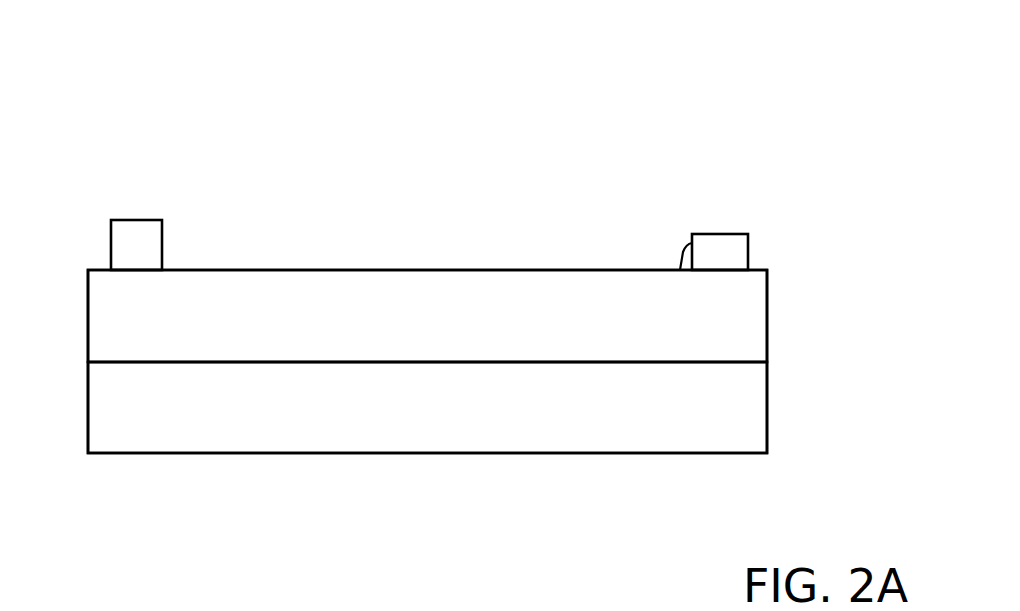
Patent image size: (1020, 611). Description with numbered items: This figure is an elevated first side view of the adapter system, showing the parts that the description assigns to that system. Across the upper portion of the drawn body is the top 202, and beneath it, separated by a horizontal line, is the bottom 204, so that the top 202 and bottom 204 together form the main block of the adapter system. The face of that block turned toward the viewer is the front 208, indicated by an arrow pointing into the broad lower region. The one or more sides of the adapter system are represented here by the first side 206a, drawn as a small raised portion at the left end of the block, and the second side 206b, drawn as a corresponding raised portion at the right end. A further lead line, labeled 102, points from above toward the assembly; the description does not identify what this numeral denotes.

The sensor device 102 is at (683, 158).
The top 202 is at (390, 270).
The bottom 204 is at (390, 453).
The front 208 is at (447, 398).
The first side 206a is at (88, 405).
The second side 206b is at (767, 405).